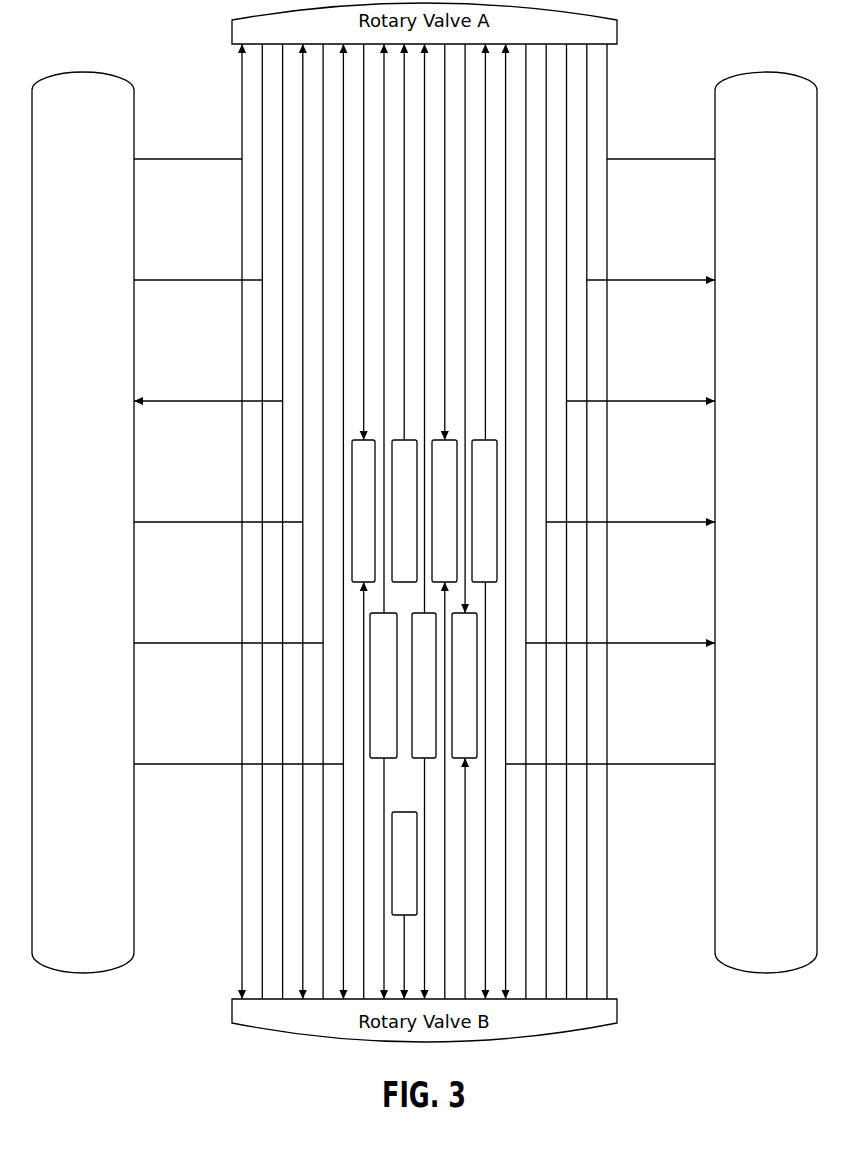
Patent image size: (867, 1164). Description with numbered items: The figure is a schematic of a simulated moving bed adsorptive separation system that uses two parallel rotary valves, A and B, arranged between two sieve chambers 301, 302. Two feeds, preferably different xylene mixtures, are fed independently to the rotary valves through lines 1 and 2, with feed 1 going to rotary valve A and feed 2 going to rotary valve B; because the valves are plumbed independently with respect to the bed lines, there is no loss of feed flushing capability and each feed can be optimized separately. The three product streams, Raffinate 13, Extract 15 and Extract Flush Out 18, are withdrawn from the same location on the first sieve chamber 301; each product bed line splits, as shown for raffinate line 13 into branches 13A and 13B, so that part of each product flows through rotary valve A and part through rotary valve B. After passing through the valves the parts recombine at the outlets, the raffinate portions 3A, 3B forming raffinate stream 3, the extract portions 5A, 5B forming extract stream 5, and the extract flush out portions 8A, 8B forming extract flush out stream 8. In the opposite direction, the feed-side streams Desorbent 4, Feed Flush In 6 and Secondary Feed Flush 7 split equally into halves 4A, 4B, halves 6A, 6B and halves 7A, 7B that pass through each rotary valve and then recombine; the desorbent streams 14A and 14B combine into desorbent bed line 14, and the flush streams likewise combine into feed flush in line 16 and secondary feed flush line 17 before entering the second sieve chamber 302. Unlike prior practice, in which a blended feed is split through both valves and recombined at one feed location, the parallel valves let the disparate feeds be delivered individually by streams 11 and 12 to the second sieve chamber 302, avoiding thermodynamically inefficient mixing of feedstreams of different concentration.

The feed line 1 is at (404, 313).
The feed line 2 is at (404, 905).
The raffinate stream 3 is at (363, 511).
The desorbent feed stream 4 is at (484, 511).
The extract stream 5 is at (444, 511).
The feed flush in stream 6 is at (424, 685).
The secondary feed flush stream 7 is at (383, 685).
The extract flush out stream 8 is at (464, 685).
The raffinate stream portion 3A is at (363, 242).
The raffinate stream portion 3B is at (363, 790).
The desorbent stream portion 4A is at (485, 242).
The desorbent stream portion 4B is at (485, 790).
The extract stream portion 5A is at (445, 242).
The extract stream portion 5B is at (445, 790).
The feed flush in stream portion 6A is at (424, 328).
The feed flush in stream portion 6B is at (424, 878).
The secondary feed flush stream portion 7A is at (384, 328).
The secondary feed flush stream portion 7B is at (384, 878).
The extract flush out stream portion 8A is at (465, 328).
The extract flush out stream portion 8B is at (465, 878).
The feed stream 11 is at (620, 643).
The feed stream 12 is at (630, 522).
The raffinate bed line 13 is at (188, 161).
The raffinate bed line branch 13A is at (242, 101).
The raffinate bed line branch 13B is at (241, 579).
The desorbent bed line 14 is at (208, 402).
The desorbent bed line branch 14A is at (283, 222).
The desorbent bed line branch 14B is at (282, 700).
The extract bed line 15 is at (238, 765).
The feed flush in bed line 16 is at (641, 388).
The secondary feed flush bed line 17 is at (651, 268).
The extract flush out bed line 18 is at (218, 510).
The sieve chamber 301 is at (83, 522).
The sieve chamber 302 is at (766, 522).